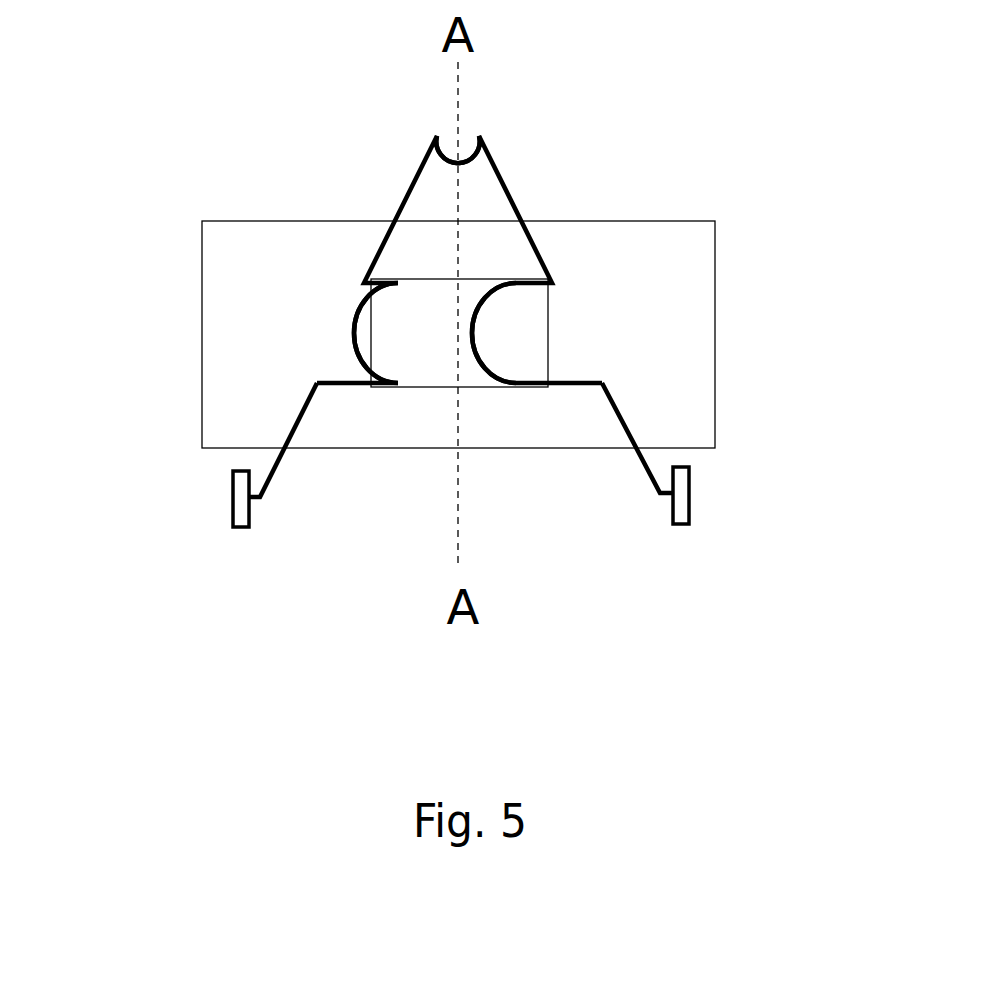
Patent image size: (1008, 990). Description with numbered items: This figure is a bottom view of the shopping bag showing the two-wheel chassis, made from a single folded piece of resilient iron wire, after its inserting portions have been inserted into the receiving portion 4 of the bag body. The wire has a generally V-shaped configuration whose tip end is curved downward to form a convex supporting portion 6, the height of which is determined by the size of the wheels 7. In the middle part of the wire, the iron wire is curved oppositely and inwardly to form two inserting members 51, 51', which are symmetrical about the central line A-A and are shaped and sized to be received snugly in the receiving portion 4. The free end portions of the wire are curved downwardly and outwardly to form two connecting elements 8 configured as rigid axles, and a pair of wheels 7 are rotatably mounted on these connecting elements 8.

The receiving portion 4 is at (472, 373).
The supporting portion 6 is at (475, 153).
The inserting member 51 is at (241, 275).
The inserting member 51' is at (682, 284).
The wheel 7 is at (237, 512).
The connecting element 8 is at (255, 500).